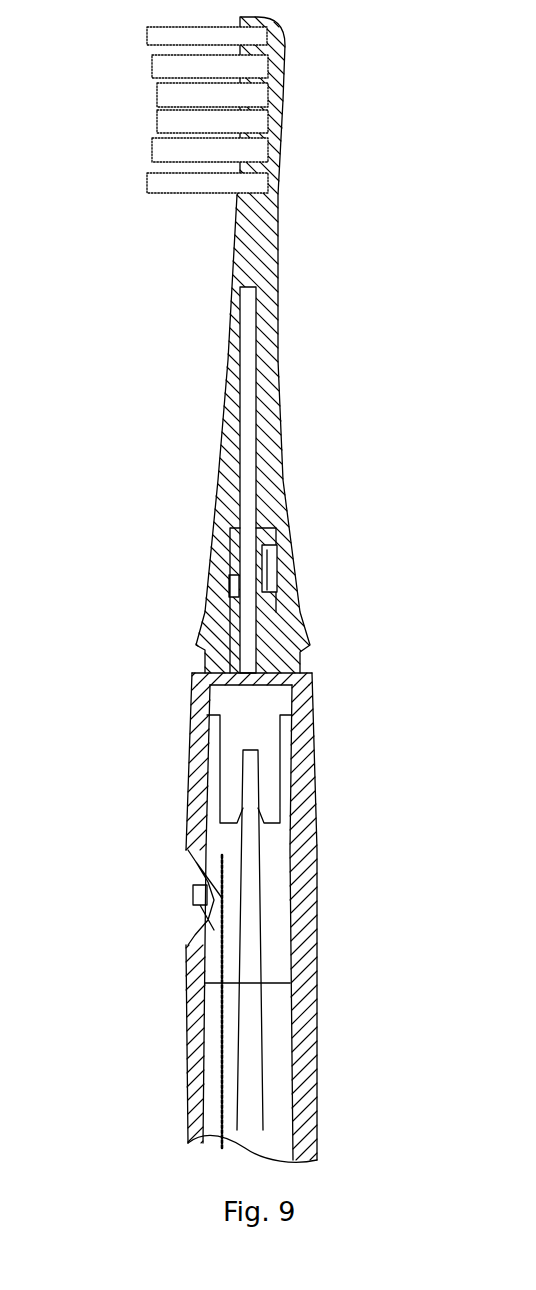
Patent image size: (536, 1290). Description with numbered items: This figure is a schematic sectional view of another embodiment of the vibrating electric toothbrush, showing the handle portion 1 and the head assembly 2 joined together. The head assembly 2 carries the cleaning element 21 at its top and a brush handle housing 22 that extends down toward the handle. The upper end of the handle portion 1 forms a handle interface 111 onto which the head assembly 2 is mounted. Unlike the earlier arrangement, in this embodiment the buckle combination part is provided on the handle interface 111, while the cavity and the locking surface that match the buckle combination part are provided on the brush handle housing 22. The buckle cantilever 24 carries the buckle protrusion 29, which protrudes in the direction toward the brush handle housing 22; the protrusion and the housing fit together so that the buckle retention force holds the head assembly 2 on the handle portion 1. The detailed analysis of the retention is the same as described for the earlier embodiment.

The handle portion 1 is at (165, 795).
The head assembly 2 is at (298, 425).
The cleaning element 21 is at (178, 185).
The brush handle housing 22 is at (240, 380).
The buckle cantilever 24 is at (262, 525).
The buckle protrusion 29 is at (262, 500).
The handle interface 111 is at (314, 662).